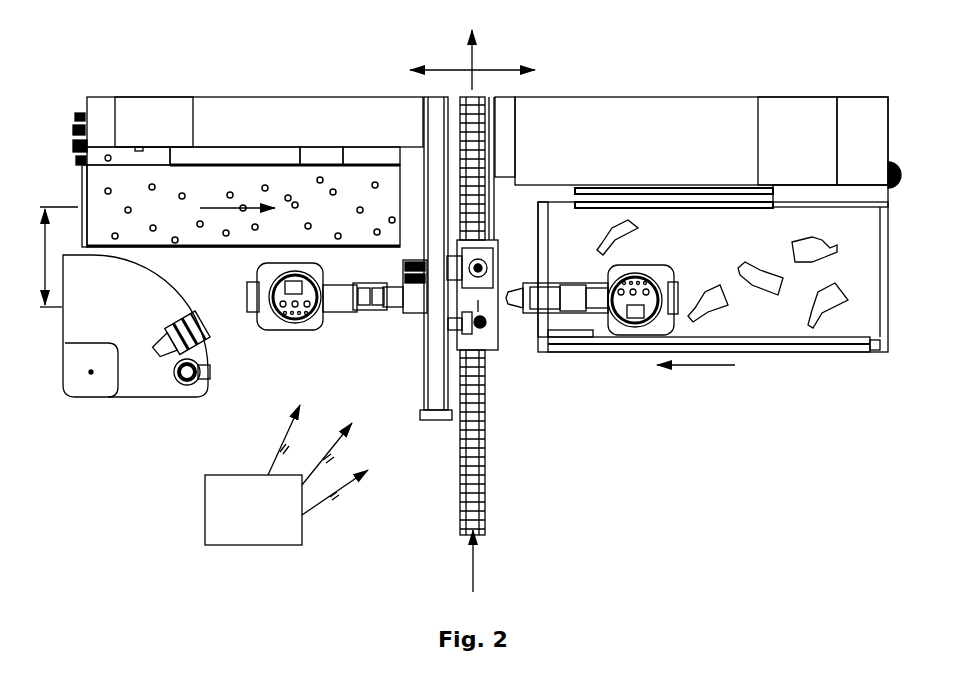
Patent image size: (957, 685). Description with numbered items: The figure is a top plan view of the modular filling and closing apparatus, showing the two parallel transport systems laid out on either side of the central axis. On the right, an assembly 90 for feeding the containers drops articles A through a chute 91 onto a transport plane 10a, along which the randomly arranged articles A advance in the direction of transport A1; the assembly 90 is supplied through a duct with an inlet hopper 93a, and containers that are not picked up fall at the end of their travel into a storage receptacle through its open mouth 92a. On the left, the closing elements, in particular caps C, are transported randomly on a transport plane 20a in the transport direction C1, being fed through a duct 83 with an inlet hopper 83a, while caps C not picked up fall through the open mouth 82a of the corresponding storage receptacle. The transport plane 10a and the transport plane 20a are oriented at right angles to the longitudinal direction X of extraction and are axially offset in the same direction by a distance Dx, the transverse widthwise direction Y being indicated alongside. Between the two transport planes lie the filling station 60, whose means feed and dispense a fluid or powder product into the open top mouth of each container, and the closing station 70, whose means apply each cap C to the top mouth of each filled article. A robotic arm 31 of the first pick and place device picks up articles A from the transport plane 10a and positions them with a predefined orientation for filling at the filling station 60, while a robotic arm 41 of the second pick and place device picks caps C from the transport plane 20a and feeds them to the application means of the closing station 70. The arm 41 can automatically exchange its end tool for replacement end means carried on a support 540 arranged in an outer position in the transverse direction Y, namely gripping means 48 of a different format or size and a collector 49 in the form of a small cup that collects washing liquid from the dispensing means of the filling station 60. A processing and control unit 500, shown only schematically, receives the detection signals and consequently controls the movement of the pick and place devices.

The duct 83 is at (274, 117).
The inlet hopper 83a is at (146, 118).
The open mouth 82a is at (362, 272).
The transport plane 20a is at (215, 185).
The transport direction C1 is at (212, 215).
The caps C is at (221, 233).
The filling station 60 is at (488, 326).
The closing station 70 is at (462, 274).
The assembly for feeding the containers 90 is at (716, 96).
The inlet hopper 93a is at (784, 117).
The chute 91 is at (870, 194).
The transport plane 10a is at (713, 270).
The direction of transport A1 is at (696, 382).
The articles A is at (833, 304).
The robotic arm 41 is at (347, 316).
The robotic arm 31 is at (592, 315).
The open mouth 92a is at (524, 337).
The turret station 540 is at (135, 326).
The gripping means 48 is at (162, 340).
The collector 49 is at (184, 374).
The unit for processing and controlling 500 is at (286, 475).
The longitudinal direction X is at (483, 307).
The transverse widthwise direction Y is at (472, 71).
The distance Dx is at (36, 252).